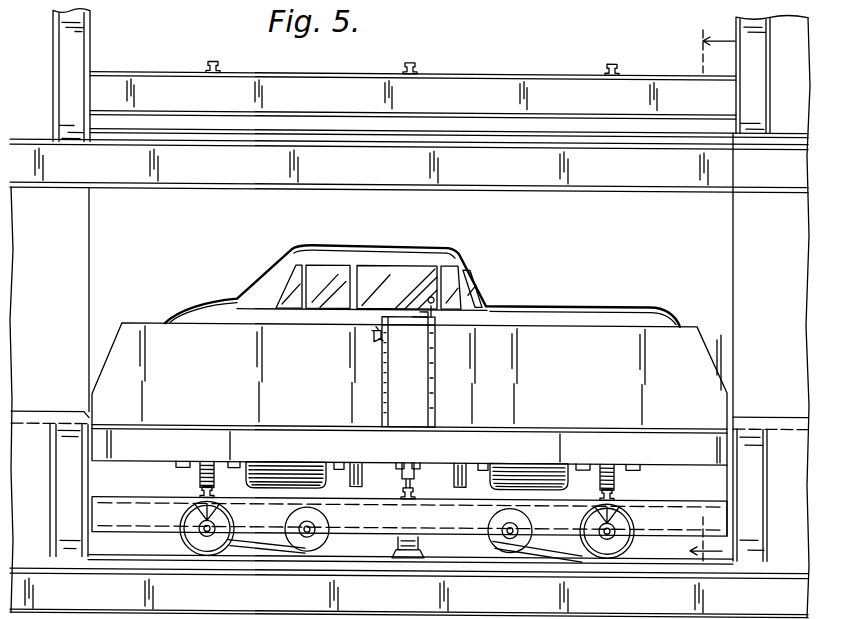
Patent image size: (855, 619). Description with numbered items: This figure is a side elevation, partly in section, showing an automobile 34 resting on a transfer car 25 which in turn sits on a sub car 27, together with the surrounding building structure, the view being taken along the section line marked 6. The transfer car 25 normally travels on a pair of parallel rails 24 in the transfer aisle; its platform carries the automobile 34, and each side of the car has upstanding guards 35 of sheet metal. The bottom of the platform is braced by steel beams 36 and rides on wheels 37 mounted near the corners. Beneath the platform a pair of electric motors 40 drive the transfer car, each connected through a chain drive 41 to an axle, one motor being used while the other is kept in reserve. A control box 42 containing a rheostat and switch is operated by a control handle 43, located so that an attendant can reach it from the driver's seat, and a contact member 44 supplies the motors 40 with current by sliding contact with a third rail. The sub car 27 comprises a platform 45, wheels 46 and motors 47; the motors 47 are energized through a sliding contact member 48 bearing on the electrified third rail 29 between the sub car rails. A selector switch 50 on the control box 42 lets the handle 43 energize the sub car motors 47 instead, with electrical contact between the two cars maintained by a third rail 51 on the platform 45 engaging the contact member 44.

The section line 6- 6 is at (712, 296).
The parallel rails 24 is at (206, 63).
The transfer car 25 is at (91, 411).
The sub car 27 is at (736, 520).
The electrified third rail 29 is at (667, 561).
The automobile 34 is at (552, 302).
The upstanding guards 35 is at (699, 346).
The steel beams 36 is at (700, 446).
The wheels 37 is at (199, 470).
The electric motors 40 is at (286, 470).
The chain drive 41 is at (361, 476).
The control box 42 is at (412, 380).
The control handle 43 is at (433, 308).
The contact member 44 is at (420, 476).
The platform 45 is at (699, 500).
The wheels 46 is at (197, 541).
The motors 47 is at (315, 541).
The sliding contact member 48 is at (401, 556).
The selector switch 50 is at (372, 340).
The third rail 51 is at (418, 64).